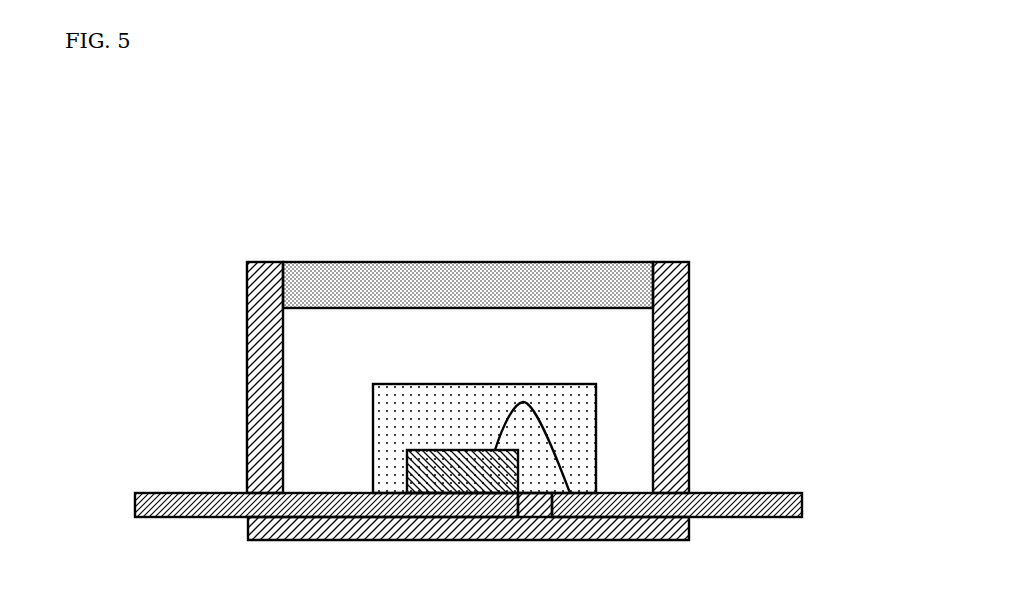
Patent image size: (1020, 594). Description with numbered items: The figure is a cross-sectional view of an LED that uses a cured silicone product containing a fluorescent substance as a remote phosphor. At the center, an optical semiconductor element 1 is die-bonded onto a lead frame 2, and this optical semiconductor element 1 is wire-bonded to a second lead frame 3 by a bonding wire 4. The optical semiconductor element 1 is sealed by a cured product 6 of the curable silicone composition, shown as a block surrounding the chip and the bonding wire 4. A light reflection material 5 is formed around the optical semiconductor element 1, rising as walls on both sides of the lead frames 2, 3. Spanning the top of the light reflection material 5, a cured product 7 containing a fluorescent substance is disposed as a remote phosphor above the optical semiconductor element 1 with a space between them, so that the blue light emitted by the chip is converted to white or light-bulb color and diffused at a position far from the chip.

The optical semiconductor element 1 is at (463, 458).
The lead frame 2 is at (220, 492).
The lead frame 3 is at (763, 492).
The bonding wire 4 is at (545, 412).
The light reflection material 5 is at (690, 300).
The cured product 6 is at (395, 428).
The cured product containing a fluorescent substance 7 is at (542, 295).